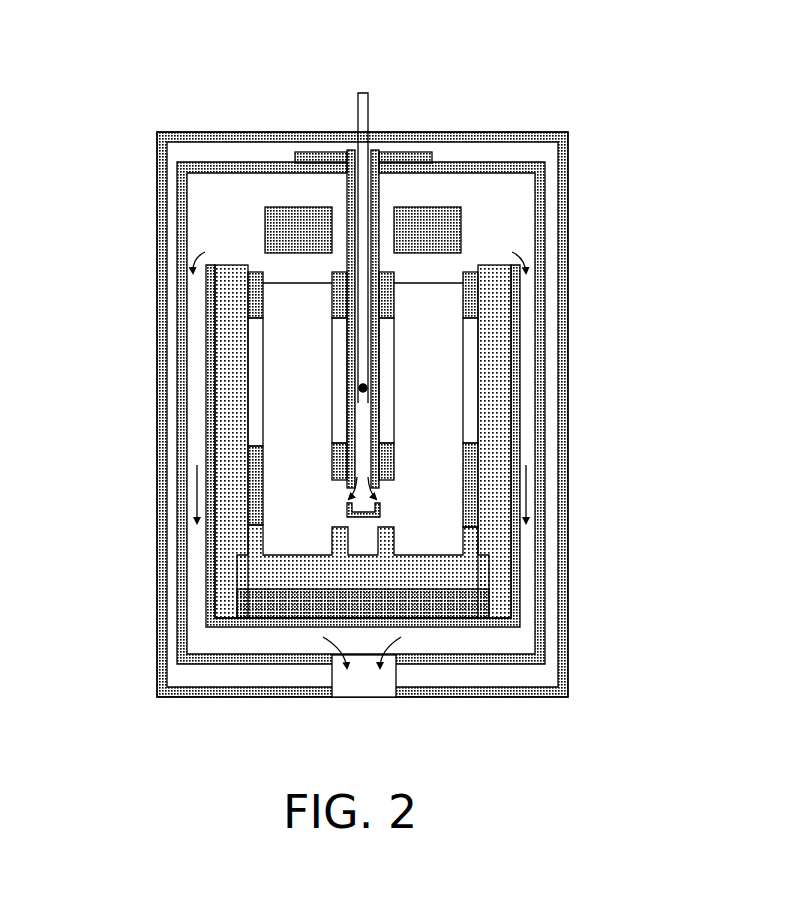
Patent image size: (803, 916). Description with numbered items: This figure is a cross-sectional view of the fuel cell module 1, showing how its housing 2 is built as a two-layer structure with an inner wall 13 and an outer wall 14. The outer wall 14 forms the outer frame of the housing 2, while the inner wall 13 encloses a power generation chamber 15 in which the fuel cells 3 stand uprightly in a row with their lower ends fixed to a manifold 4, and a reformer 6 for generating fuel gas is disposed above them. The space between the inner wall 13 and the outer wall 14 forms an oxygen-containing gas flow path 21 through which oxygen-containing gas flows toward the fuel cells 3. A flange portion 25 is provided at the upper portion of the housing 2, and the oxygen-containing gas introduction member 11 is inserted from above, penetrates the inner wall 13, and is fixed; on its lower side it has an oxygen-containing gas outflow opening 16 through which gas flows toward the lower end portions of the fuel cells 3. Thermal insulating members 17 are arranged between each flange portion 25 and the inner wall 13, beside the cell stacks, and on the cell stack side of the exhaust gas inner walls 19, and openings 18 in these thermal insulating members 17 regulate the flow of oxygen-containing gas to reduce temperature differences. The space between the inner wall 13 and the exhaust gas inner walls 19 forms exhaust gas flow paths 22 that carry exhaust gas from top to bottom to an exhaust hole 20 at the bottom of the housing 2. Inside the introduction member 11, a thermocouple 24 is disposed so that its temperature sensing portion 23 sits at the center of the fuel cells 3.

The fuel cell module 1 is at (158, 109).
The housing 2 is at (157, 136).
The fuel cells 3 is at (278, 285).
The manifold 4 is at (497, 567).
The reformer 6 is at (453, 207).
The oxygen-containing gas introduction member 11 is at (348, 190).
The inner wall 13 is at (538, 235).
The outer wall 14 is at (507, 137).
The power generation chamber 15 is at (207, 187).
The oxygen-containing gas outflow opening 16 is at (345, 493).
The thermal insulating member 17 is at (435, 155).
The openings 18 is at (258, 407).
The exhaust gas inner walls 19 is at (520, 312).
The exhaust hole 20 is at (333, 677).
The oxygen-containing gas flow path 21 is at (170, 480).
The exhaust gas flow paths 22 is at (197, 565).
The temperature sensing portion 23 is at (360, 386).
The thermocouple 24 is at (370, 122).
The flange portion 25 is at (393, 152).